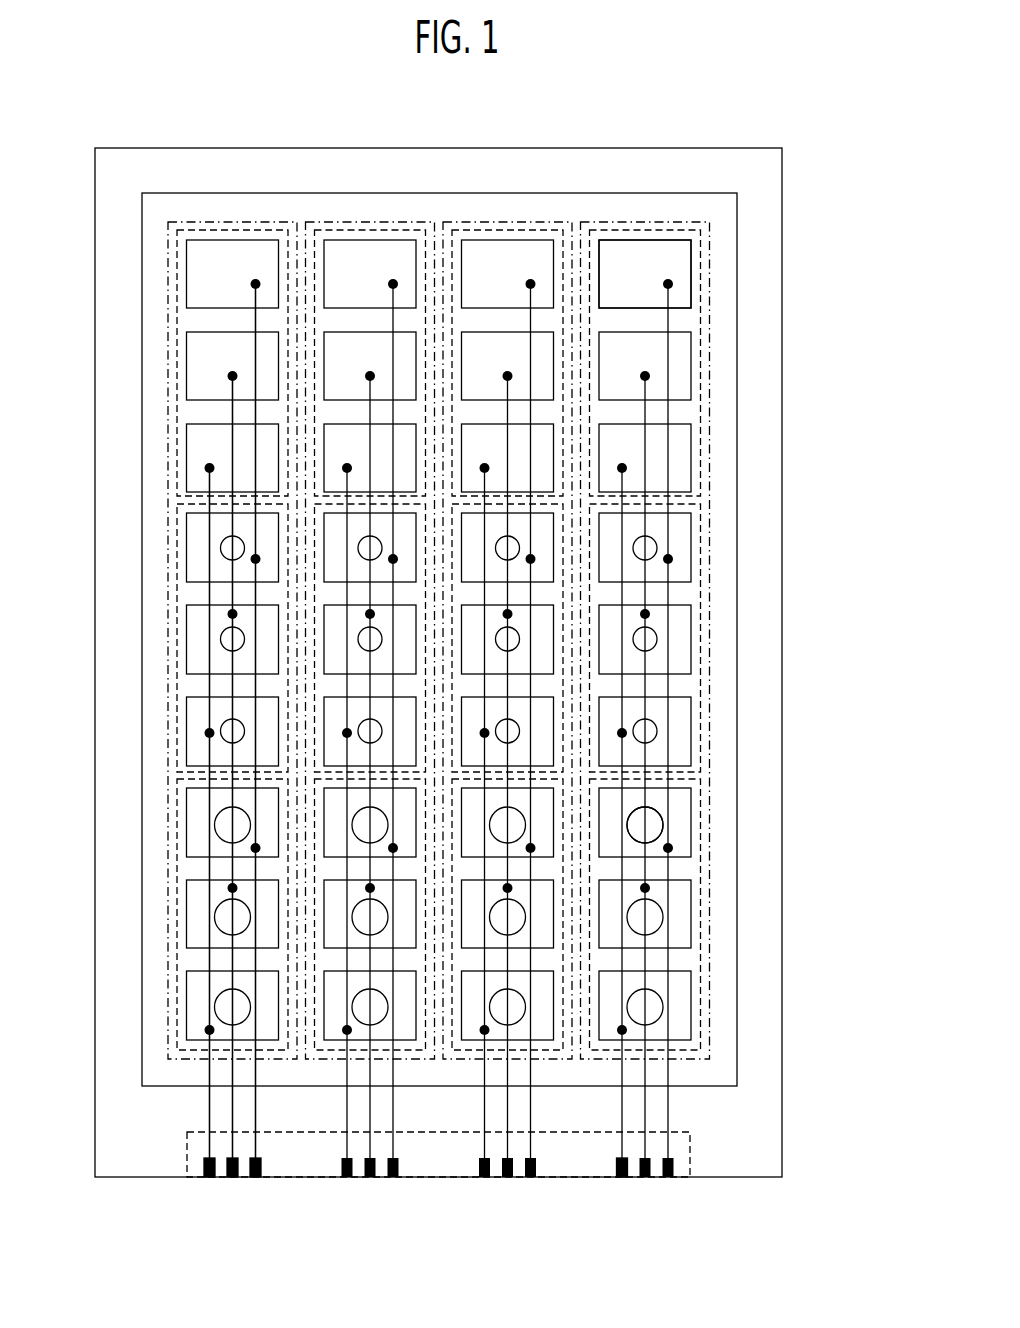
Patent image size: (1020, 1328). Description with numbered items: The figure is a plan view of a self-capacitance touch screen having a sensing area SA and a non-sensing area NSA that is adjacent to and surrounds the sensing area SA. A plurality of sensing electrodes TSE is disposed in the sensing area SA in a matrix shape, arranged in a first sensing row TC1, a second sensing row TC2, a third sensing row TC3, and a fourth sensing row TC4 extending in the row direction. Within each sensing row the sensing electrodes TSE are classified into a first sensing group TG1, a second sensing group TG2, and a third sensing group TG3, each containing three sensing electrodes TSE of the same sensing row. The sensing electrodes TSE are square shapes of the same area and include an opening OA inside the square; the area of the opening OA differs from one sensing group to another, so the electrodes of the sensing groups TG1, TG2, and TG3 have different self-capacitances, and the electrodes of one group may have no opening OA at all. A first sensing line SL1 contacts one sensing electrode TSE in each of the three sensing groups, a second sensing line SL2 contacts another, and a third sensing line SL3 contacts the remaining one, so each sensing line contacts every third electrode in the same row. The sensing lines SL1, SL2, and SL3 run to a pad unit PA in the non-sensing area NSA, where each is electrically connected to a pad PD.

The first sensing row TC1 is at (232, 222).
The second sensing row TC2 is at (370, 222).
The third sensing row TC3 is at (508, 222).
The fourth sensing row TC4 is at (645, 222).
The sensing electrode TSE is at (673, 252).
The first sensing group TG1 is at (178, 383).
The second sensing group TG2 is at (178, 625).
The third sensing group TG3 is at (178, 857).
The non-sensing area NSA is at (766, 503).
The sensing area SA is at (737, 648).
The opening OA is at (663, 825).
The first sensing line SL1 is at (210, 1113).
The second sensing line SL2 is at (233, 1113).
The third sensing line SL3 is at (256, 1113).
The pad PD is at (618, 1167).
The pad unit PA is at (690, 1147).